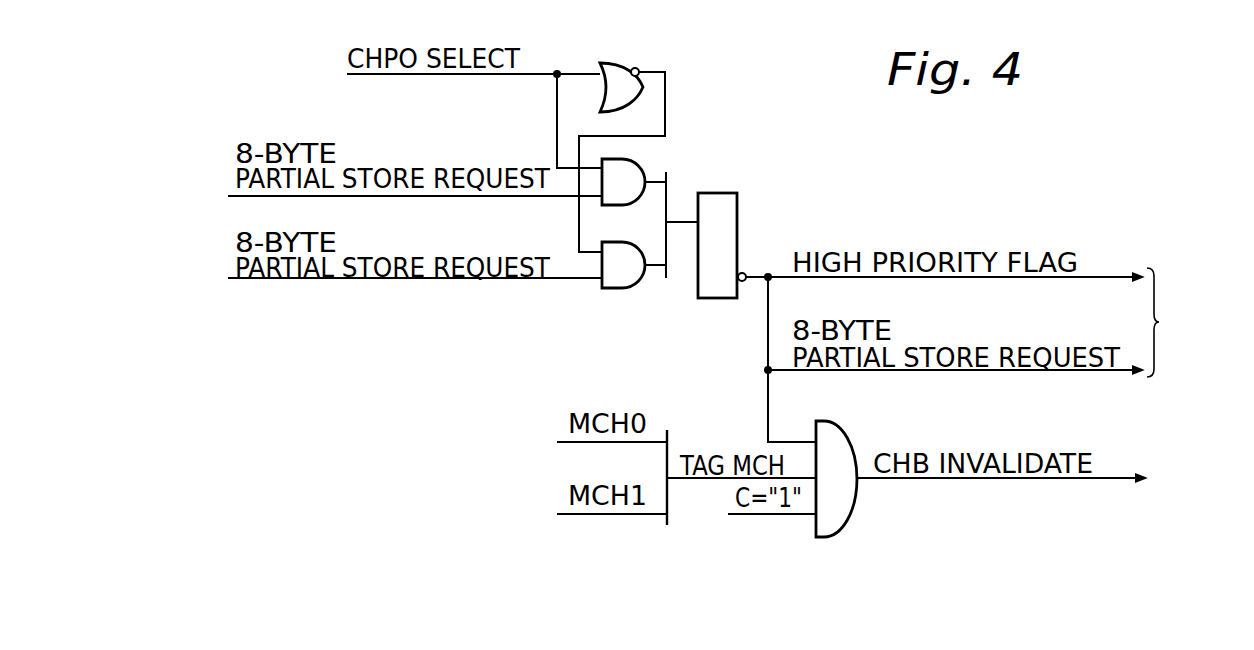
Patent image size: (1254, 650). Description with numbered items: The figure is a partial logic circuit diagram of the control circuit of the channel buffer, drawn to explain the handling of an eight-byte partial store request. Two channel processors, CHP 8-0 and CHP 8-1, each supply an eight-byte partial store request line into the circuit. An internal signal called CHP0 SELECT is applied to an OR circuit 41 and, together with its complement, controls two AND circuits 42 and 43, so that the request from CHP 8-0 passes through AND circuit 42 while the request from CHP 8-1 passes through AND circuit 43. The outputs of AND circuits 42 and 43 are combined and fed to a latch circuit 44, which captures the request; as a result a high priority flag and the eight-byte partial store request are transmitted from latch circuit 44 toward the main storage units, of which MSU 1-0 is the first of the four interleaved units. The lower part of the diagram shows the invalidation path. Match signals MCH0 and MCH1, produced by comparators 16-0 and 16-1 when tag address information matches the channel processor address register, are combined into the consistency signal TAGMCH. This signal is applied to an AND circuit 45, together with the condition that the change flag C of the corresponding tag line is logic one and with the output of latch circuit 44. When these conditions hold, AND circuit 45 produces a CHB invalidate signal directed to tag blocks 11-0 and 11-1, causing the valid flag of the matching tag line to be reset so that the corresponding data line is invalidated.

The OR circuit 41 is at (622, 63).
The AND circuit 42 is at (648, 170).
The AND circuit 43 is at (640, 286).
The latch circuit 44 is at (738, 207).
The AND circuit 45 is at (853, 432).
The CHP 8-0 is at (391, 194).
The CHP 8-1 is at (392, 279).
The comparator 16-0 is at (577, 444).
The comparator 16-1 is at (577, 514).
The MSU 1-0 is at (1179, 322).
The tag block 11-0 is at (1181, 471).
The tag block 11-1 is at (1177, 503).